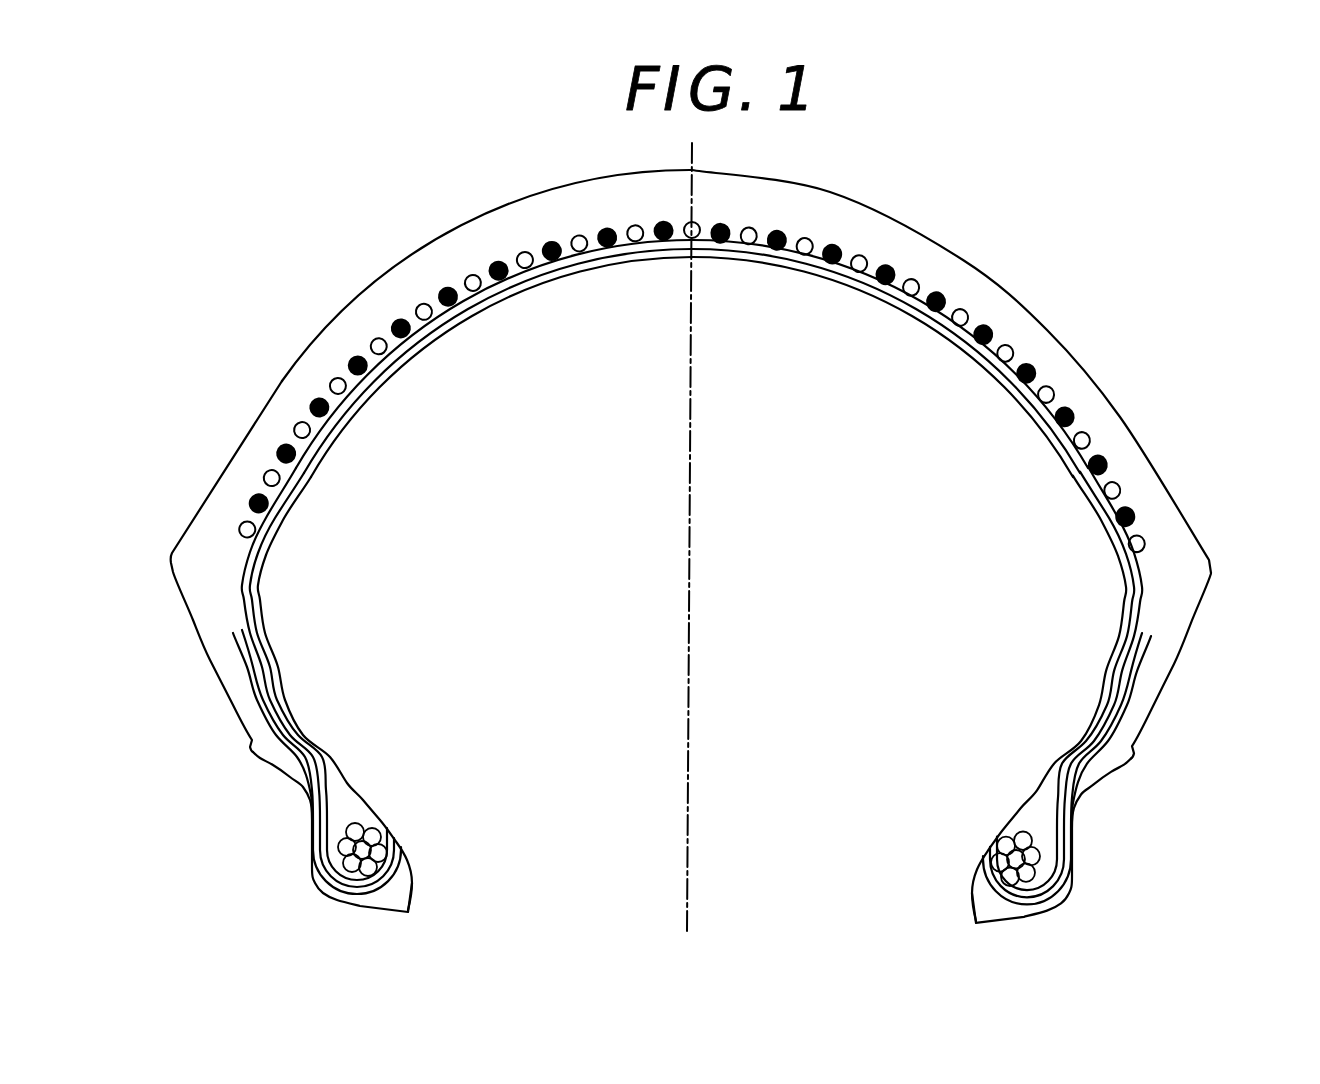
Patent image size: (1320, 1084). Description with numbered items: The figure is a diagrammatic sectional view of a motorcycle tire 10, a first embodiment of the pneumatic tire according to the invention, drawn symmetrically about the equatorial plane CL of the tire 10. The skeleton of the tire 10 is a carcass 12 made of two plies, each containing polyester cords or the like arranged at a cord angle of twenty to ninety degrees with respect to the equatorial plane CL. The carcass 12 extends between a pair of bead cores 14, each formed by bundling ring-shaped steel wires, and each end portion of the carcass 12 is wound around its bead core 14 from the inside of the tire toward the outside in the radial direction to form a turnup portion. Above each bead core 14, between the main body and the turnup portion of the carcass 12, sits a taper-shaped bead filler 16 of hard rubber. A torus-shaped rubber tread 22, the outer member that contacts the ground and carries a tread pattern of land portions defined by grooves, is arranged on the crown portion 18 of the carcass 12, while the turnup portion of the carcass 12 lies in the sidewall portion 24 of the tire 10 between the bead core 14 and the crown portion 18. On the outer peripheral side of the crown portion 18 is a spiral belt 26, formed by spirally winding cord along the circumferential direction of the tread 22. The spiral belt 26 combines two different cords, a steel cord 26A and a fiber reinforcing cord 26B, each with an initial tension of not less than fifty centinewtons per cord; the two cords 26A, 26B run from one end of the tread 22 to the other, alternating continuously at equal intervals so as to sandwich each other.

The motorcycle tire 10 is at (706, 524).
The carcass 12 is at (1140, 587).
The bead core 14 is at (347, 852).
The bead filler 16 is at (347, 808).
The crown portion 18 is at (657, 260).
The tread 22 is at (1050, 329).
The sidewall portion 24 is at (210, 661).
The spiral belt 26 is at (692, 320).
The steel cord 26A is at (427, 304).
The fiber reinforcing cord 26B is at (328, 148).
The equatorial plane CL is at (690, 637).